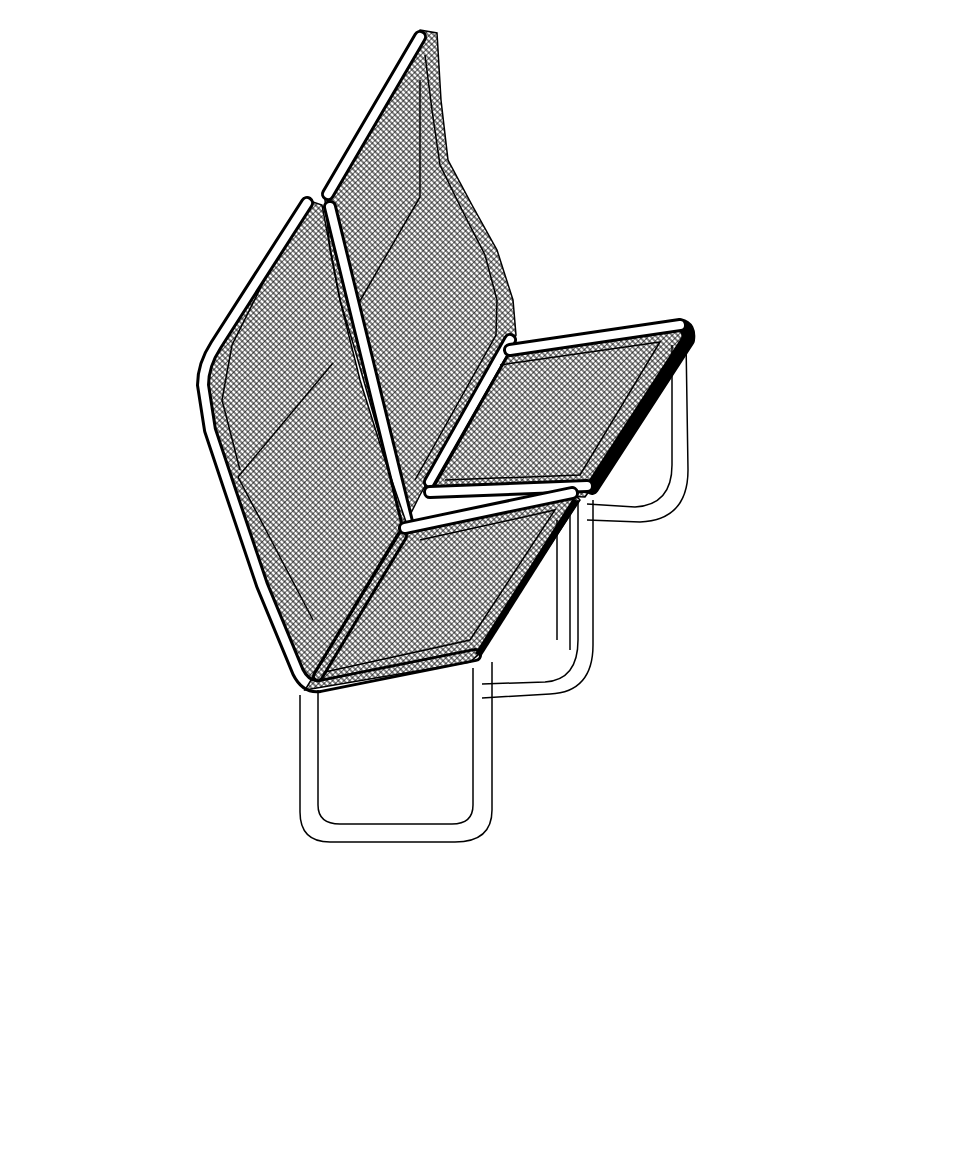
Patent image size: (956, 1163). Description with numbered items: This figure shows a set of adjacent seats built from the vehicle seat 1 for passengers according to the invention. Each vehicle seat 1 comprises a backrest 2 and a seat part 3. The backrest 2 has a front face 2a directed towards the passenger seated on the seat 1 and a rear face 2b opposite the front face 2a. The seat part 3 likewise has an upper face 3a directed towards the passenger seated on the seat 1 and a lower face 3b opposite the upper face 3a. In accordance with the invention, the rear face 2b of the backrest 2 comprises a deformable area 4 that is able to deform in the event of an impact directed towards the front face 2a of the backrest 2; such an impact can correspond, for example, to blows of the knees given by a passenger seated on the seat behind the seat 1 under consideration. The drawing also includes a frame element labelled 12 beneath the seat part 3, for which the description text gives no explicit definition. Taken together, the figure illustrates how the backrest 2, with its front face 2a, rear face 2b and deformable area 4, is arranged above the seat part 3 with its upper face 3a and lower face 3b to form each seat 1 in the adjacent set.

The vehicle seat 1 is at (244, 260).
The backrest 2 is at (195, 416).
The front face 2a is at (457, 236).
The rear face 2b is at (225, 530).
The seat part 3 is at (530, 655).
The upper face 3a is at (603, 330).
The lower face 3b is at (652, 388).
The deformable area 4 is at (287, 553).
The front leg frame 12 is at (425, 838).